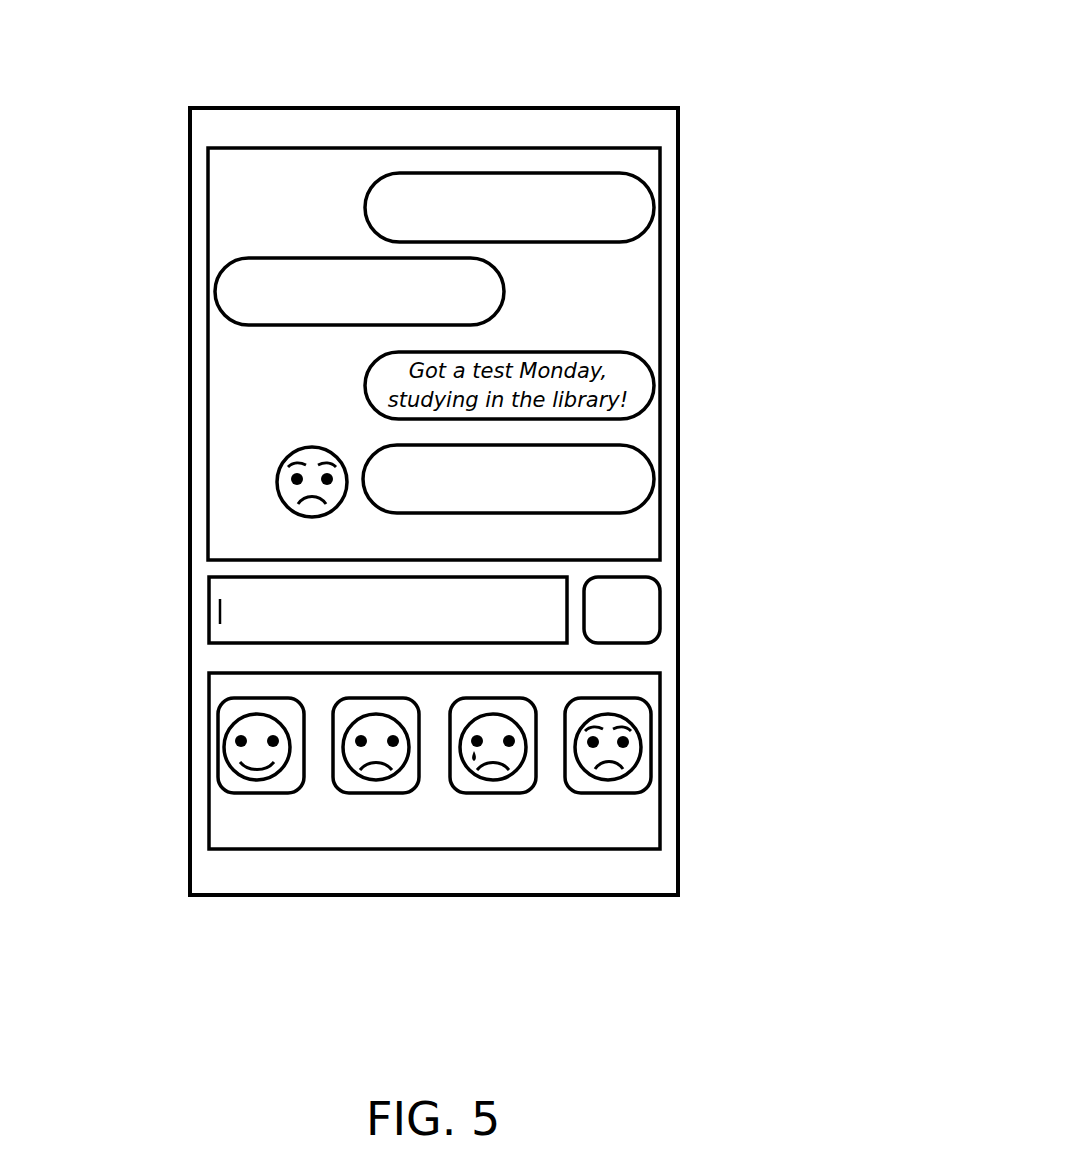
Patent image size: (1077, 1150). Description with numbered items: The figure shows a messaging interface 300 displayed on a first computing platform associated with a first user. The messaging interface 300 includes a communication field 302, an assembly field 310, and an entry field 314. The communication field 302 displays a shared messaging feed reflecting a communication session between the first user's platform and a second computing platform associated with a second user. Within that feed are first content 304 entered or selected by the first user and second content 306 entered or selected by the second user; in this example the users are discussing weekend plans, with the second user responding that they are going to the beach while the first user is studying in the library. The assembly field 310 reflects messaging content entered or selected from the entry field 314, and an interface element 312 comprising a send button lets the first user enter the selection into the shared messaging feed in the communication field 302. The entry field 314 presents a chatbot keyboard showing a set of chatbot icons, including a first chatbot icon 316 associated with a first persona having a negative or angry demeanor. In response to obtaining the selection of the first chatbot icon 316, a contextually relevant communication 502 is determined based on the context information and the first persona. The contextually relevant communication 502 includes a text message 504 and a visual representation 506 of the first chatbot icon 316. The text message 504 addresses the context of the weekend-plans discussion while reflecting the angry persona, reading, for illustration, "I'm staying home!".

The messaging interface 300 is at (666, 78).
The communication field 302 is at (230, 370).
The first content 304 is at (630, 222).
The second content 306 is at (497, 290).
The assembly field 310 is at (213, 595).
The interface element 312 is at (637, 623).
The entry field 314 is at (242, 820).
The first chatbot icon 316 is at (618, 767).
The contextually relevant communication 502 is at (645, 462).
The text message 504 is at (622, 483).
The visual representation 506 is at (275, 488).